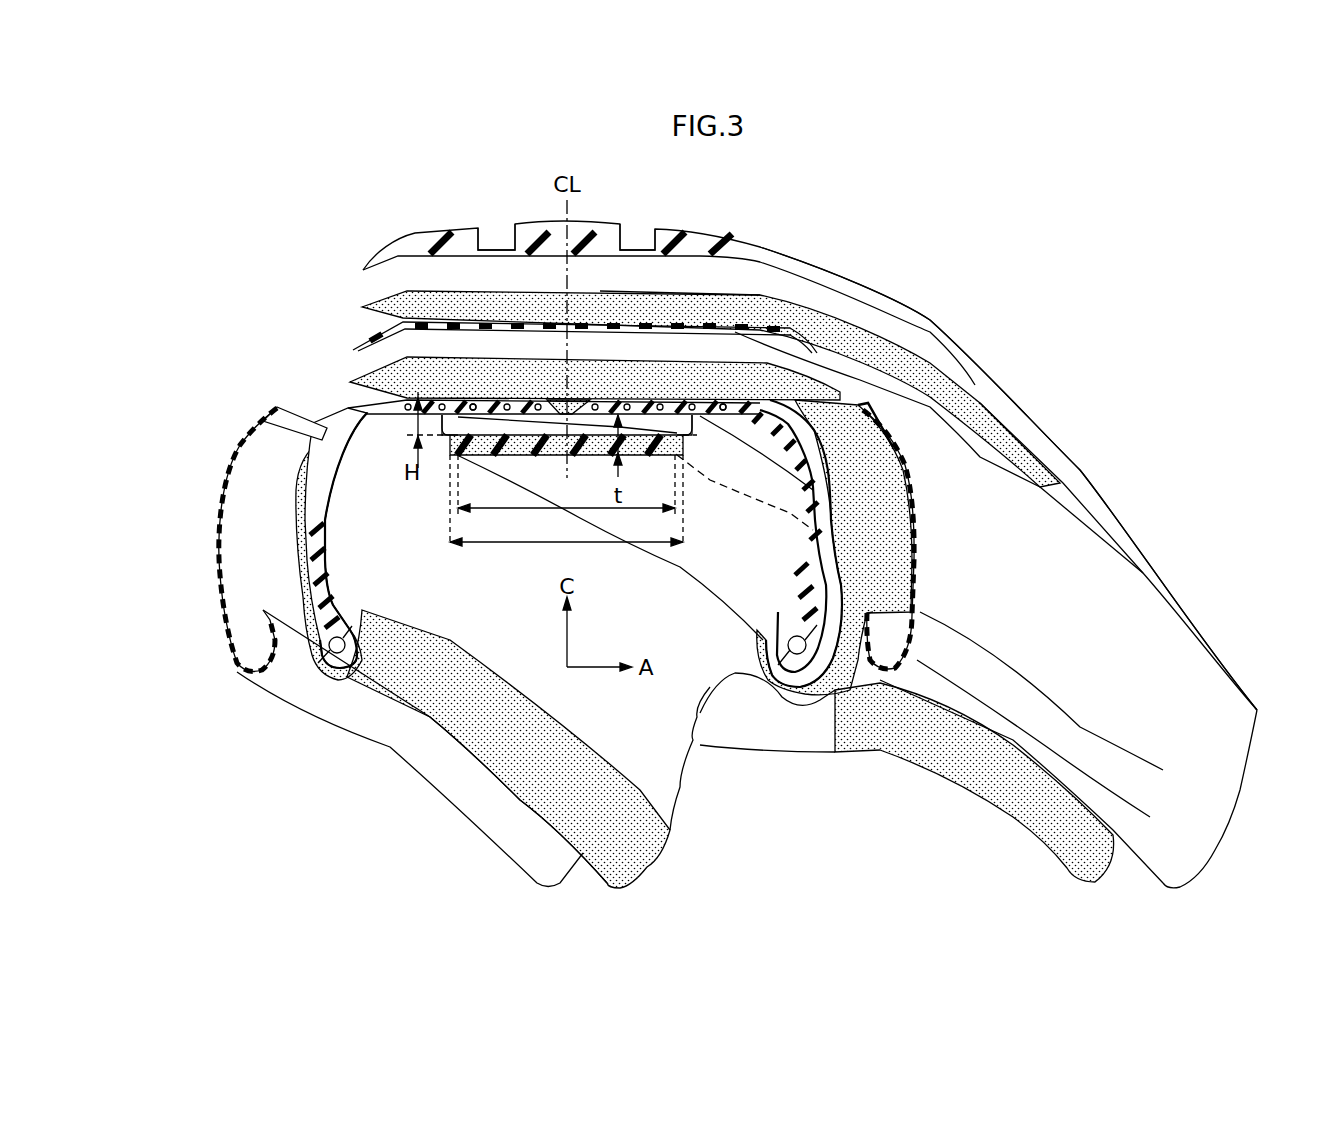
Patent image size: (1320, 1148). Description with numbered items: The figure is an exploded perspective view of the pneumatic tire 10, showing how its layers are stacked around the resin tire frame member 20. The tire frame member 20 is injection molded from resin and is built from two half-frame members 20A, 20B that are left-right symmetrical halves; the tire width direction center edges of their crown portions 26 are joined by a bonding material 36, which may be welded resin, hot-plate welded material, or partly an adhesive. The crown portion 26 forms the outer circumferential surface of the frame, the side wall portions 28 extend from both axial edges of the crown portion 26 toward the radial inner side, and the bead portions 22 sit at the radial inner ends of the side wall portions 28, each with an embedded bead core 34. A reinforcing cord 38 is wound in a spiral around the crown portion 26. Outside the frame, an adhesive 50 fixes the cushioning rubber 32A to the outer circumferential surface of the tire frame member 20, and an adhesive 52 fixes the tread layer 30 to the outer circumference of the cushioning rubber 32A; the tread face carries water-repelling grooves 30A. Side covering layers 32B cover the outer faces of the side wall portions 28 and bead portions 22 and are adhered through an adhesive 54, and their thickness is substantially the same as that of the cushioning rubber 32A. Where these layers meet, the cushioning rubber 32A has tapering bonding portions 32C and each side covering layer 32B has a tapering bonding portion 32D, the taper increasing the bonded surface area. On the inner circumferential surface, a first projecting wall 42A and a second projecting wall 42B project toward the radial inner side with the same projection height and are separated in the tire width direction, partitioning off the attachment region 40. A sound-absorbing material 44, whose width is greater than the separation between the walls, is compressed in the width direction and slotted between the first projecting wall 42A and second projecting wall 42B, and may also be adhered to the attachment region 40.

The pneumatic tire 10 is at (893, 280).
The tire frame member 20 is at (360, 402).
The half-frame member 20A is at (305, 458).
The half-frame member 20B is at (827, 487).
The bead portion 22 is at (330, 647).
The crown portion 26 is at (763, 458).
The side wall portion 28 is at (318, 519).
The tread layer 30 is at (437, 233).
The water-repelling groove 30A is at (497, 247).
The cushioning rubber 32A is at (646, 322).
The side covering layer 32B is at (233, 553).
The bonding portion 32C is at (352, 348).
The bonding portion 32D is at (293, 410).
The bead core 34 is at (316, 660).
The bonding material 36 is at (576, 410).
The reinforcing cord 38 is at (450, 422).
The attachment region 40 is at (602, 496).
The first projecting wall 42A is at (444, 433).
The second projecting wall 42B is at (697, 458).
The sound-absorbing material 44 is at (540, 460).
The adhesive 50 is at (680, 377).
The adhesive 52 is at (717, 303).
The adhesive 54 is at (403, 692).